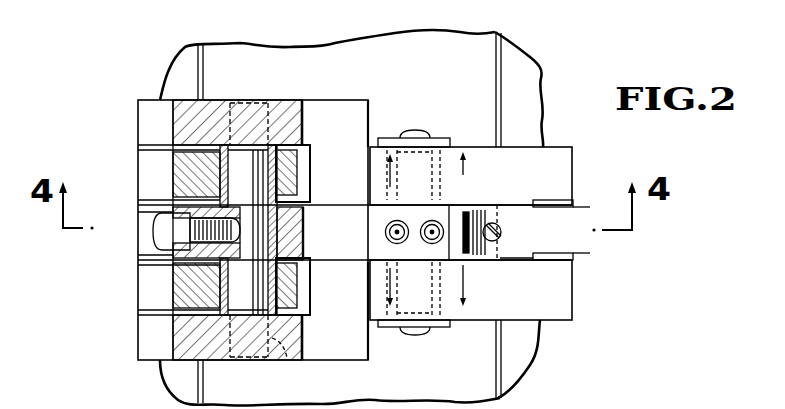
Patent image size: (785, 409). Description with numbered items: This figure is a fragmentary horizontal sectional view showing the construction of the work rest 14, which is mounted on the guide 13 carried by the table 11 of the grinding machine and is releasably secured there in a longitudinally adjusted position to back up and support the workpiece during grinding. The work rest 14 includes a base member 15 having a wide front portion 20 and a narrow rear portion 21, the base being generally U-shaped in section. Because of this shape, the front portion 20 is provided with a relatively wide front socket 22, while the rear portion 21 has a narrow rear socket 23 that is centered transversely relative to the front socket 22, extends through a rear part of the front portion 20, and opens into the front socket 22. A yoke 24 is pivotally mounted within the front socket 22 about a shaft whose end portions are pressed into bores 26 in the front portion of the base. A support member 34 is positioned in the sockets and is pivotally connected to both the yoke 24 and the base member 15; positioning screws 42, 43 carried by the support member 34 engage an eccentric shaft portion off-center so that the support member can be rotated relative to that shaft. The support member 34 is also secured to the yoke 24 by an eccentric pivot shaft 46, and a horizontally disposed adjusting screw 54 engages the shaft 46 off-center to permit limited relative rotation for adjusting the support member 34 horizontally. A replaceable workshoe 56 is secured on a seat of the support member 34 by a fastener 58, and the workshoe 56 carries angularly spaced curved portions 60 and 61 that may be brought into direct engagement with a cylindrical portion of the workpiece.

The table 11 is at (539, 207).
The guide 13 is at (327, 50).
The work rest 14 is at (355, 204).
The base member 15 is at (385, 202).
The wide front portion 20 is at (330, 377).
The narrow rear portion 21 is at (497, 299).
The front socket 22 is at (309, 152).
The rear socket 23 is at (471, 167).
The yoke 24 is at (158, 160).
The bores 26 is at (299, 369).
The support member 34 is at (335, 277).
The positioning screw 42 is at (368, 222).
The positioning screw 43 is at (420, 268).
The eccentric pivot shaft 46 is at (197, 242).
The adjusting screw 54 is at (167, 219).
The workshoe 56 is at (532, 277).
The fastener 58 is at (520, 232).
The curved portion 60 is at (483, 230).
The curved portion 61 is at (581, 220).